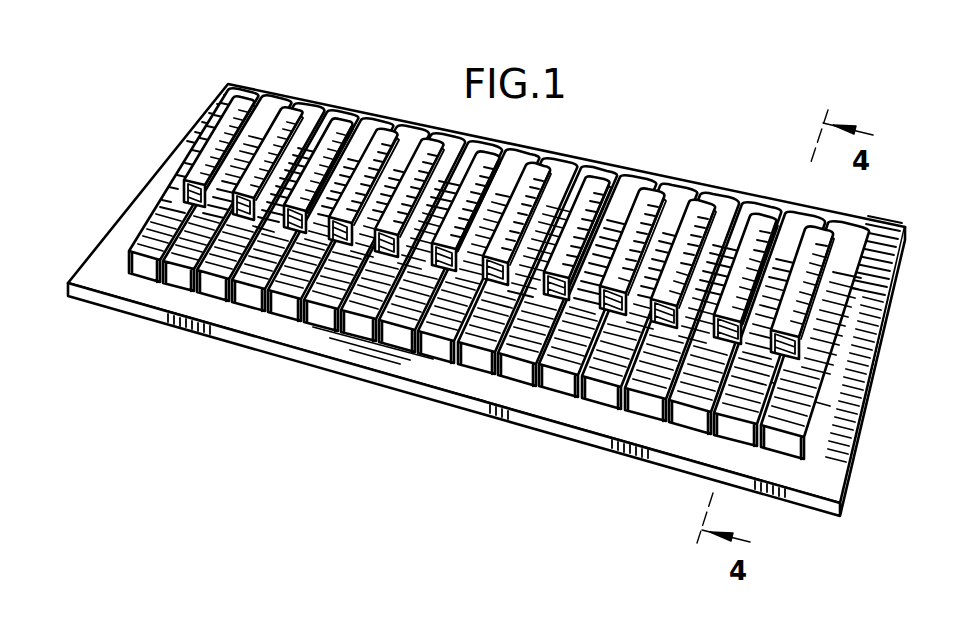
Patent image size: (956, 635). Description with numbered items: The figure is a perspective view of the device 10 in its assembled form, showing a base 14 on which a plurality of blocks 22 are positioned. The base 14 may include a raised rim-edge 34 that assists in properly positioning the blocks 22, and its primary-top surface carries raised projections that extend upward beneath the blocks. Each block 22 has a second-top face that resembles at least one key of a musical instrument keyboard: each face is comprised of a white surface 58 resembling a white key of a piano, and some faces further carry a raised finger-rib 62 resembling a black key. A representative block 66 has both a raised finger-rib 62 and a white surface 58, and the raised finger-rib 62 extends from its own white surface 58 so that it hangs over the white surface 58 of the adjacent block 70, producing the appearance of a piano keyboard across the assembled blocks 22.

The device 10 is at (475, 280).
The base 14 is at (475, 300).
The blocks 22 is at (225, 234).
The raised rim-edge 34 is at (193, 185).
The white surface 58 is at (557, 312).
The raised finger-rib 62 is at (509, 227).
The representative block 66 is at (709, 357).
The adjacent block 70 is at (769, 377).